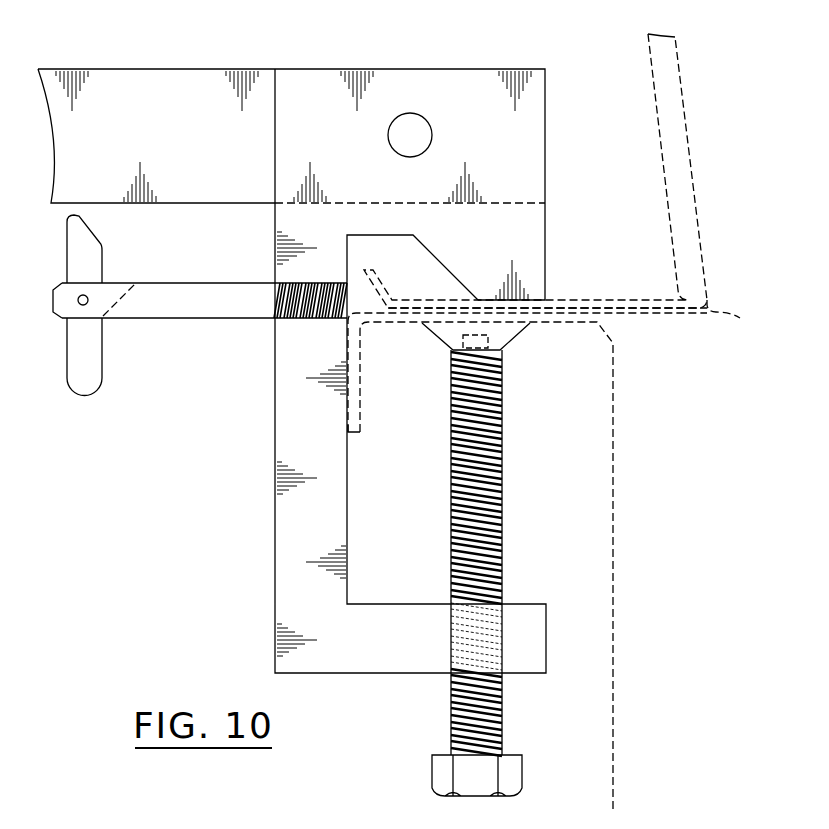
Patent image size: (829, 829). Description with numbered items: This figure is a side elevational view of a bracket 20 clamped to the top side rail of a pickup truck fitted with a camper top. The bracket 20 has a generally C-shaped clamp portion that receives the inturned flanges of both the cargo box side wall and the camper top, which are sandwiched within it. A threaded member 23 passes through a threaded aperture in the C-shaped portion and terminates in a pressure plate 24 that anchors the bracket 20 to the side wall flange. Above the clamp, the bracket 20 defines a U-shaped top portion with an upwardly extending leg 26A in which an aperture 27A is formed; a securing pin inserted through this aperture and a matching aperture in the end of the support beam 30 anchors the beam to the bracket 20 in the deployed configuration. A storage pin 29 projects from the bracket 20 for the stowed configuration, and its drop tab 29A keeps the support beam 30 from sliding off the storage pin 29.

The bracket 20 is at (268, 494).
The threaded member 23 is at (500, 497).
The pressure plate 24 is at (505, 341).
The upwardly extending leg 26A is at (465, 80).
The aperture 27A is at (408, 132).
The storage pin 29 is at (193, 290).
The drop tab 29A is at (98, 365).
The support beam 30 is at (195, 146).